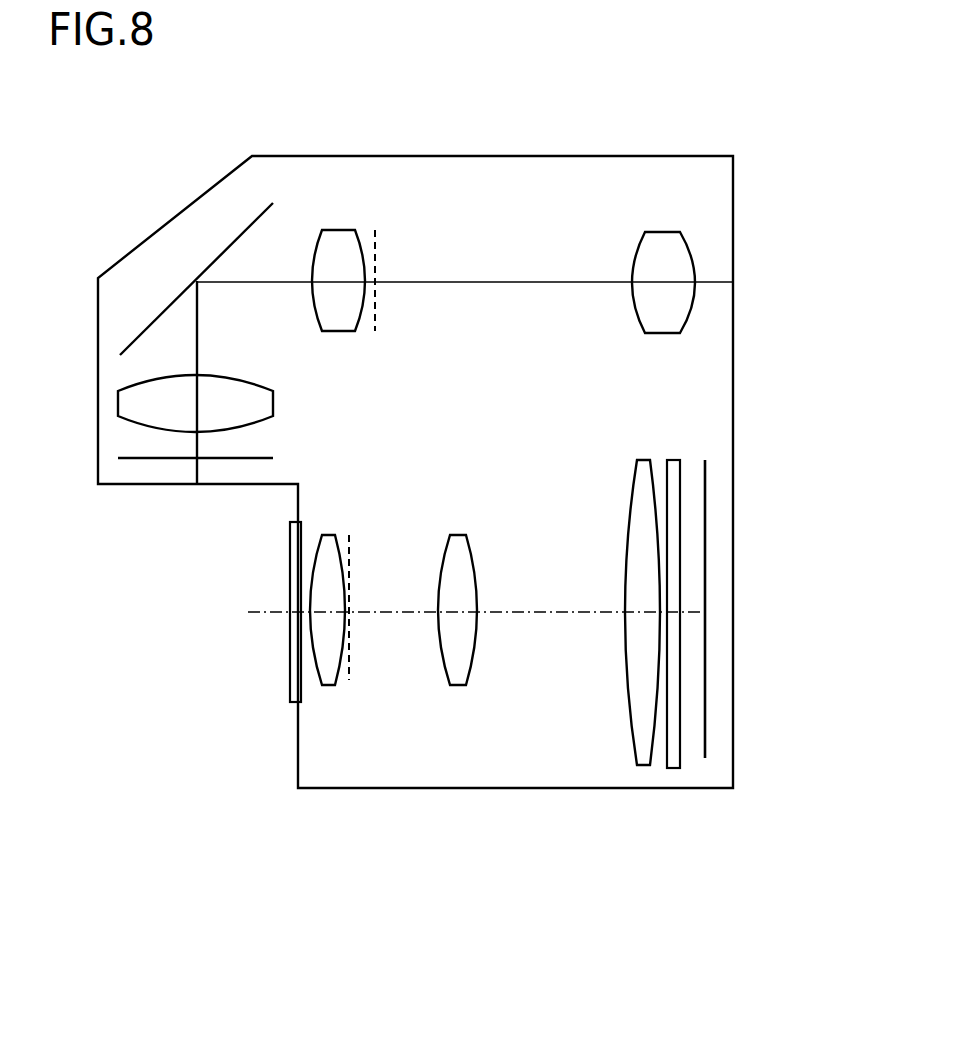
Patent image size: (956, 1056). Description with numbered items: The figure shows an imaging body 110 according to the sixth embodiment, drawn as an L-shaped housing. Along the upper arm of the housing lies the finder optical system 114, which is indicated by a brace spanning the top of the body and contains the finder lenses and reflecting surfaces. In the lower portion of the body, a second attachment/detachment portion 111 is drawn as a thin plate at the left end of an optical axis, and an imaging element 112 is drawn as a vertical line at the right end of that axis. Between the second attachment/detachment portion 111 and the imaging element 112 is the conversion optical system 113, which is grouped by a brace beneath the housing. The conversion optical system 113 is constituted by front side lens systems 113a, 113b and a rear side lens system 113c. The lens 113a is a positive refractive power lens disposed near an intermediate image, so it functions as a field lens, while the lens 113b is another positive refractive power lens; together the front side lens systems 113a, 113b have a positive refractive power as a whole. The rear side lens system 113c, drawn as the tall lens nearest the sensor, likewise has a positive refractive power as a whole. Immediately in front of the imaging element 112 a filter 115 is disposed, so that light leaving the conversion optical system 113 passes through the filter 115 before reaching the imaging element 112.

The imaging body 110 is at (723, 129).
The second attachment/detachment portion 111 is at (293, 580).
The imaging element 112 is at (707, 573).
The conversion optical system 113 is at (476, 694).
The positive refractive power lens 113a is at (327, 673).
The positive refractive power lens 113b is at (455, 673).
The rear side lens system 113c is at (634, 660).
The finder optical system 114 is at (680, 128).
The filter 115 is at (675, 752).